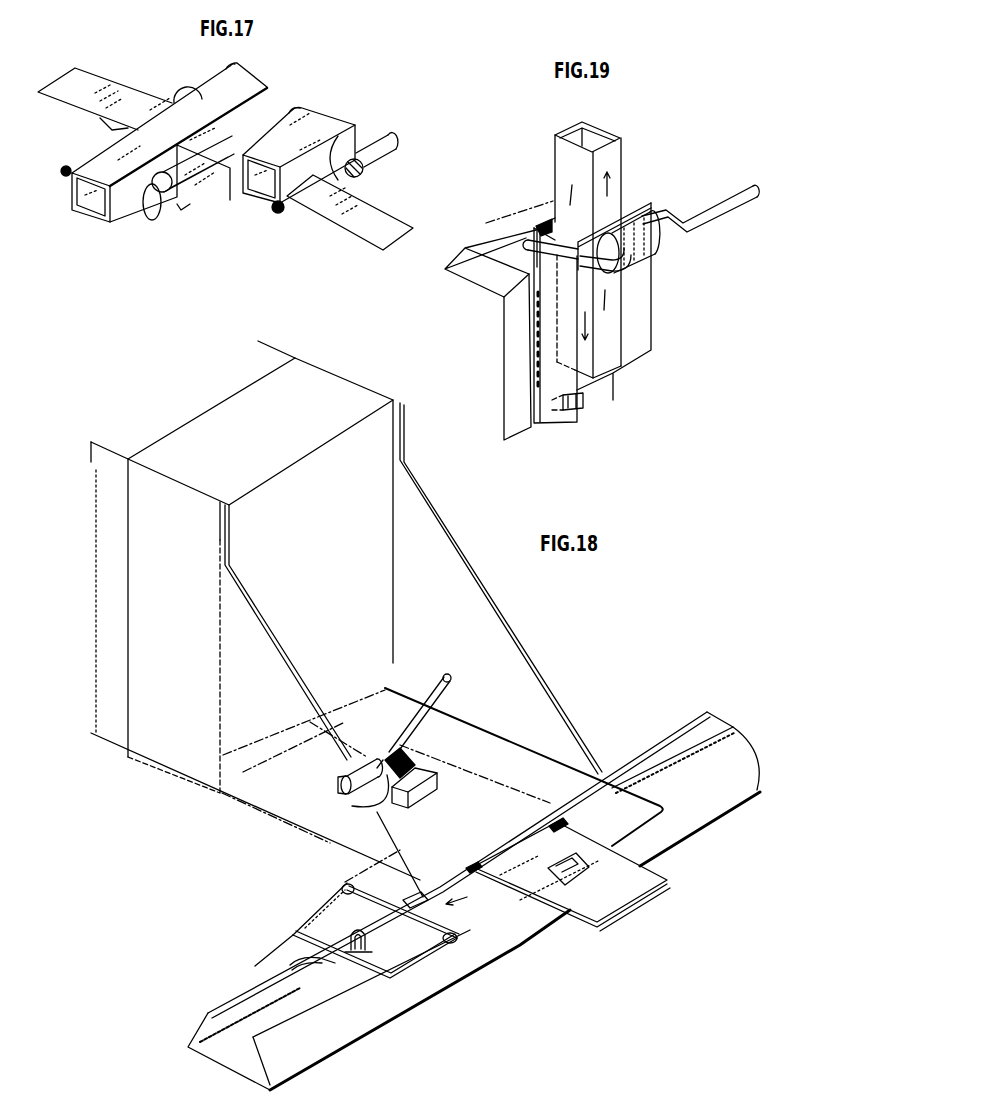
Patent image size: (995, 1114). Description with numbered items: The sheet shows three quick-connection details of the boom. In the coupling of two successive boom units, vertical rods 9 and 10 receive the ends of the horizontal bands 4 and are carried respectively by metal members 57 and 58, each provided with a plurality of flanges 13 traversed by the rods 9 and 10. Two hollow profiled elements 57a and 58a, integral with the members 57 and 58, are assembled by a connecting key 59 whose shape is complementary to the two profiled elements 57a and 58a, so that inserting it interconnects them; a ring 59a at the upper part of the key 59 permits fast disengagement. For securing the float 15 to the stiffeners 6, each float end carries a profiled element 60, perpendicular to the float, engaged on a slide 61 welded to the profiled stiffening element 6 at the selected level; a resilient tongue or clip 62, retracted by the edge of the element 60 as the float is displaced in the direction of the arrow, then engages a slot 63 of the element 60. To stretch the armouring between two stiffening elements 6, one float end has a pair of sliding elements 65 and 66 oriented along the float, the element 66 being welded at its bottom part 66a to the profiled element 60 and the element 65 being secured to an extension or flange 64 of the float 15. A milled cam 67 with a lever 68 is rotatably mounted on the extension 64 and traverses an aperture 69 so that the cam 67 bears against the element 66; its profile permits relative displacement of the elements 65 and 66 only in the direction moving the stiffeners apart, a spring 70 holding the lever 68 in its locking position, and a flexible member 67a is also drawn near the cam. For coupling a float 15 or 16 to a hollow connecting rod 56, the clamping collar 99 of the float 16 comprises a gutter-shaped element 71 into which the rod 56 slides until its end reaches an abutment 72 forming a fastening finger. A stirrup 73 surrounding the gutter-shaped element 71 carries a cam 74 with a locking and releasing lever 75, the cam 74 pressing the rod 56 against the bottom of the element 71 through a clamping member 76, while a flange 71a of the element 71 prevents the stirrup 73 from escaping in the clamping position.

In FIG. 17, the horizontal band 4 is at (98, 82).
In FIG. 17, the vertical rod 9 is at (67, 164).
In FIG. 17, the vertical rod 10 is at (395, 140).
In FIG. 17, the flange 13 is at (190, 90).
In FIG. 17, the metal member 57 is at (237, 82).
In FIG. 17, the hollow profiled element 57a is at (277, 95).
In FIG. 17, the metal member 58 is at (332, 120).
In FIG. 17, the hollow profiled element 58a is at (301, 107).
In FIG. 17, the connecting key 59 is at (203, 197).
In FIG. 17, the ring 59a is at (155, 223).
In FIG. 19, the hollow connecting rod 56 is at (617, 183).
In FIG. 19, the gutter-shaped element 71 is at (548, 405).
In FIG. 19, the flange 71a is at (541, 222).
In FIG. 19, the abutment 72 is at (581, 408).
In FIG. 19, the stirrup 73 is at (527, 240).
In FIG. 19, the cam 74 is at (651, 256).
In FIG. 19, the locking and releasing lever 75 is at (710, 216).
In FIG. 19, the clamping member 76 is at (642, 208).
In FIG. 19, the clamping collar 99 is at (507, 254).
In FIG. 19, the float 16 is at (504, 306).
In FIG. 18, the float 15 is at (112, 737).
In FIG. 18, the extension or flange 64 is at (540, 768).
In FIG. 18, the sliding element 65 is at (560, 821).
In FIG. 18, the sliding element 66 is at (665, 880).
In FIG. 18, the bottom part 66a is at (627, 908).
In FIG. 18, the milled cam 67 is at (377, 787).
In FIG. 18, the latch cable 67a is at (377, 768).
In FIG. 18, the lever 68 is at (449, 684).
In FIG. 18, the aperture 69 is at (412, 773).
In FIG. 18, the spring 70 is at (410, 728).
In FIG. 18, the profiled element 60 is at (342, 888).
In FIG. 18, the slide 61 is at (335, 910).
In FIG. 18, the resilient tongue or clip 62 is at (323, 963).
In FIG. 18, the slot 63 is at (448, 942).
In FIG. 18, the profiled stiffening element 6 is at (205, 1022).